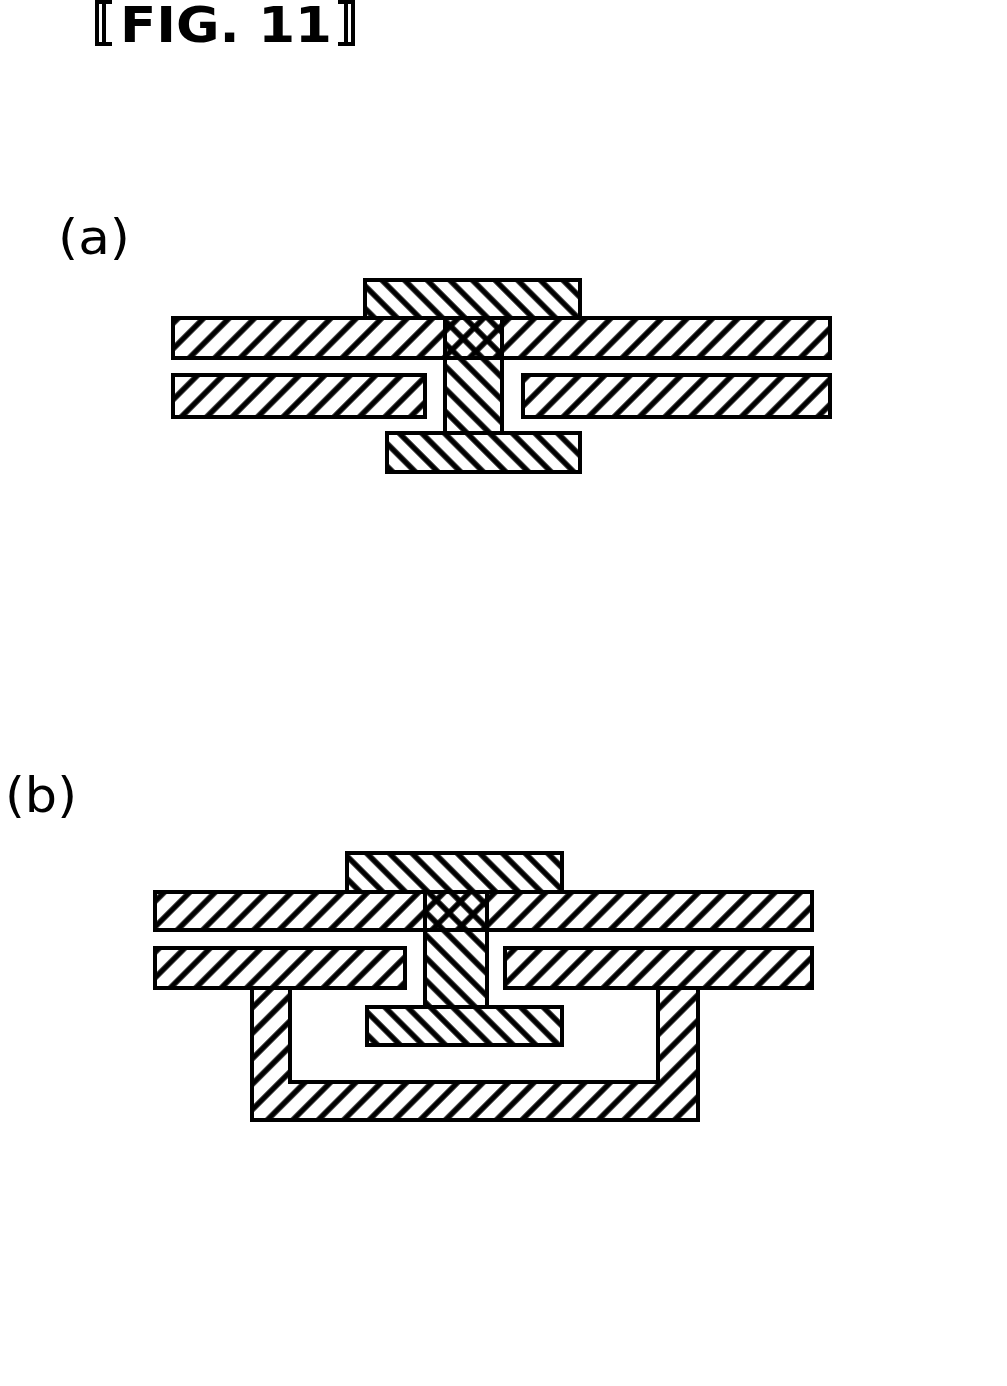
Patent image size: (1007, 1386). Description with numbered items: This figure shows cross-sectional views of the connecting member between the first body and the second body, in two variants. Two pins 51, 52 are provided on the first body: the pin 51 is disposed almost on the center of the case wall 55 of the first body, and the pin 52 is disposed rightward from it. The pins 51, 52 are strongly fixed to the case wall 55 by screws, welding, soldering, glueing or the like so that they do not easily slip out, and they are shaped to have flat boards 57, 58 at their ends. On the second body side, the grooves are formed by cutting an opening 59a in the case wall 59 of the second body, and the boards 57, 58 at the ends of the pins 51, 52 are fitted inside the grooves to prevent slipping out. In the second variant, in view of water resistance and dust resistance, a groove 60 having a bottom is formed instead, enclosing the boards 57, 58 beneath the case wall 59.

The pin 51 is at (477, 568).
The pin 52 is at (477, 568).
The case wall 55 is at (492, 548).
The flat board 57 is at (446, 846).
The flat board 58 is at (446, 846).
The case wall 59 is at (514, 769).
The opening 59a is at (336, 826).
The groove having a bottom 60 is at (483, 1125).